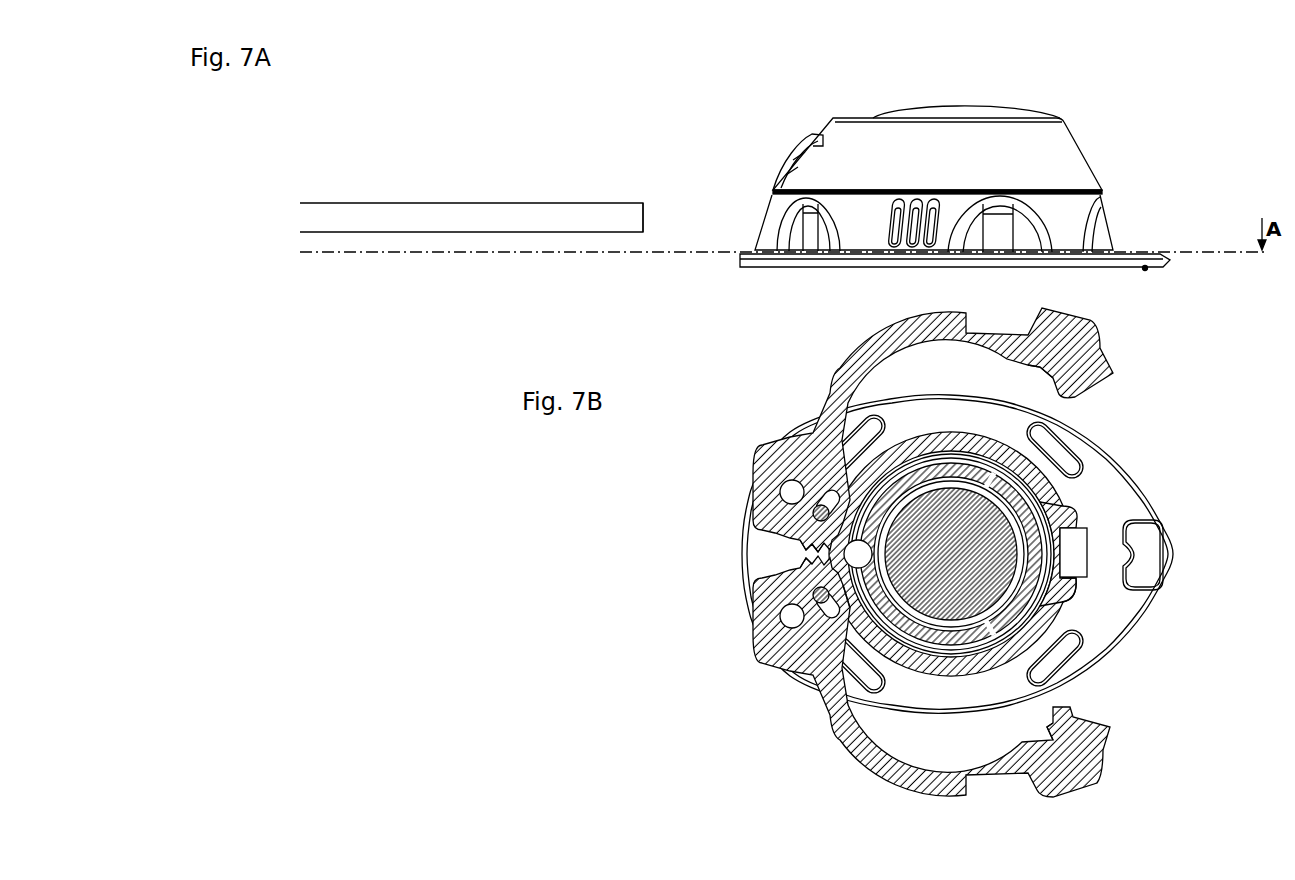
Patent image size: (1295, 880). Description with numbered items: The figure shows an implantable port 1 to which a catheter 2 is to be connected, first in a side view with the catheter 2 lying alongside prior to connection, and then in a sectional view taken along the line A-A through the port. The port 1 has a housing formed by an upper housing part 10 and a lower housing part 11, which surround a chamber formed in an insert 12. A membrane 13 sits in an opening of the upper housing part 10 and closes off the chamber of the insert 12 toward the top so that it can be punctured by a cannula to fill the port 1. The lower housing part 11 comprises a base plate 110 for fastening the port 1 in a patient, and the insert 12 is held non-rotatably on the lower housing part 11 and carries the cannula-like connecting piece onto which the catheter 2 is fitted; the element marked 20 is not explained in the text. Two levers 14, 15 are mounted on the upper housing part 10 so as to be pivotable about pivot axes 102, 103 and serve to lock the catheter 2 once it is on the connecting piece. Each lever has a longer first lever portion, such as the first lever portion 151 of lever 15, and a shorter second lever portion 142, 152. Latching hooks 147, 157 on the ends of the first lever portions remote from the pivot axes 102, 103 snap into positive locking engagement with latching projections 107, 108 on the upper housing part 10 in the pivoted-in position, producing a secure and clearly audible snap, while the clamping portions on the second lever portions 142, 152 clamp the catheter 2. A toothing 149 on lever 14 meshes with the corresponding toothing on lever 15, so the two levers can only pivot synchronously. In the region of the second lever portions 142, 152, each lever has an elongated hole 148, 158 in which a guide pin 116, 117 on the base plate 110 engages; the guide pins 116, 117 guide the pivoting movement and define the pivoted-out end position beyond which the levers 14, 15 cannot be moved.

In FIG. 7A, the port 1 is at (1177, 173).
In FIG. 7A, the catheter 2 is at (485, 223).
In FIG. 7A, the mounting surface edge 20 is at (628, 225).
In FIG. 7A, the upper housing part 10 is at (1068, 158).
In FIG. 7B, the upper housing part 10 is at (1035, 548).
In FIG. 7A, the lower housing part 11 is at (1145, 268).
In FIG. 7B, the lower housing part 11 is at (1032, 527).
In FIG. 7B, the insert 12 is at (1012, 585).
In FIG. 7A, the membrane 13 is at (965, 110).
In FIG. 7A, the lever 14 is at (870, 245).
In FIG. 7B, the lever 14 is at (1070, 776).
In FIG. 7B, the lever 15 is at (865, 358).
In FIG. 7B, the pivot axis 102 is at (792, 617).
In FIG. 7B, the pivot axis 103 is at (783, 483).
In FIG. 7B, the latching projection 107 is at (1074, 584).
In FIG. 7B, the latching projection 108 is at (1067, 523).
In FIG. 7A, the base plate 110 is at (1075, 260).
In FIG. 7B, the guide pin 116 is at (788, 667).
In FIG. 7B, the guide pin 117 is at (823, 515).
In FIG. 7B, the second lever portion 142 is at (805, 559).
In FIG. 7B, the latching hook 147 is at (1050, 727).
In FIG. 7B, the elongated hole 148 is at (827, 617).
In FIG. 7B, the toothing 149 is at (812, 597).
In FIG. 7B, the first lever portion 151 is at (815, 549).
In FIG. 7B, the second lever portion 152 is at (805, 541).
In FIG. 7B, the latching hook 157 is at (1043, 392).
In FIG. 7B, the elongated hole 158 is at (827, 490).